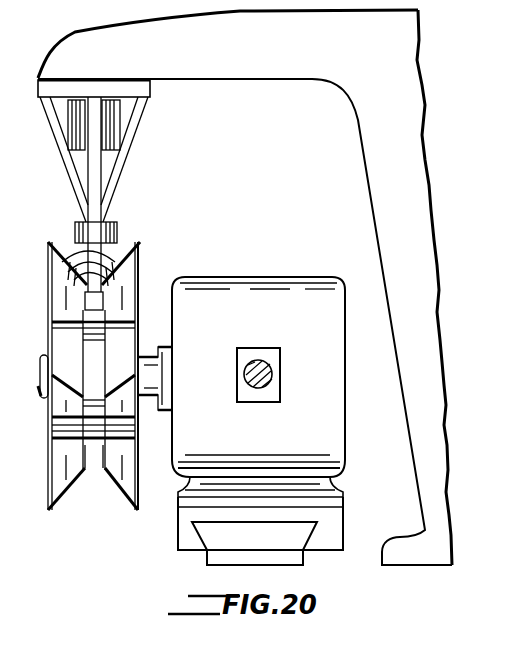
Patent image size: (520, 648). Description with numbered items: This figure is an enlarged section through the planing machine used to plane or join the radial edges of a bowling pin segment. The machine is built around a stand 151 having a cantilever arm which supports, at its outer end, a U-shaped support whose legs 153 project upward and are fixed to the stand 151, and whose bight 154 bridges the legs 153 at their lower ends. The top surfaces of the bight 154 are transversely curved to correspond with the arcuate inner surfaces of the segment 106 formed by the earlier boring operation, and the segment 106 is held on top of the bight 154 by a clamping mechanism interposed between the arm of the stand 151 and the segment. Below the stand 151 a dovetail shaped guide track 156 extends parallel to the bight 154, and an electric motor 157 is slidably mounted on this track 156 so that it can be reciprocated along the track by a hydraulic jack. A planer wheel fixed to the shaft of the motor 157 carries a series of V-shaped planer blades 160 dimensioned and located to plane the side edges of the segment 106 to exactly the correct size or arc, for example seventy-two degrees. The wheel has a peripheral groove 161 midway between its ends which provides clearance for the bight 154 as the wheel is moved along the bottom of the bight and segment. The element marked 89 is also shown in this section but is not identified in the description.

The mounting bracket 89 is at (75, 143).
The stand 151 is at (378, 172).
The legs 153 is at (95, 207).
The bight 154 is at (95, 293).
The segment 106 is at (76, 262).
The V-shaped planer blades 160 is at (60, 452).
The peripheral groove 161 is at (93, 468).
The electric motor 157 is at (268, 320).
The guide track 156 is at (262, 551).